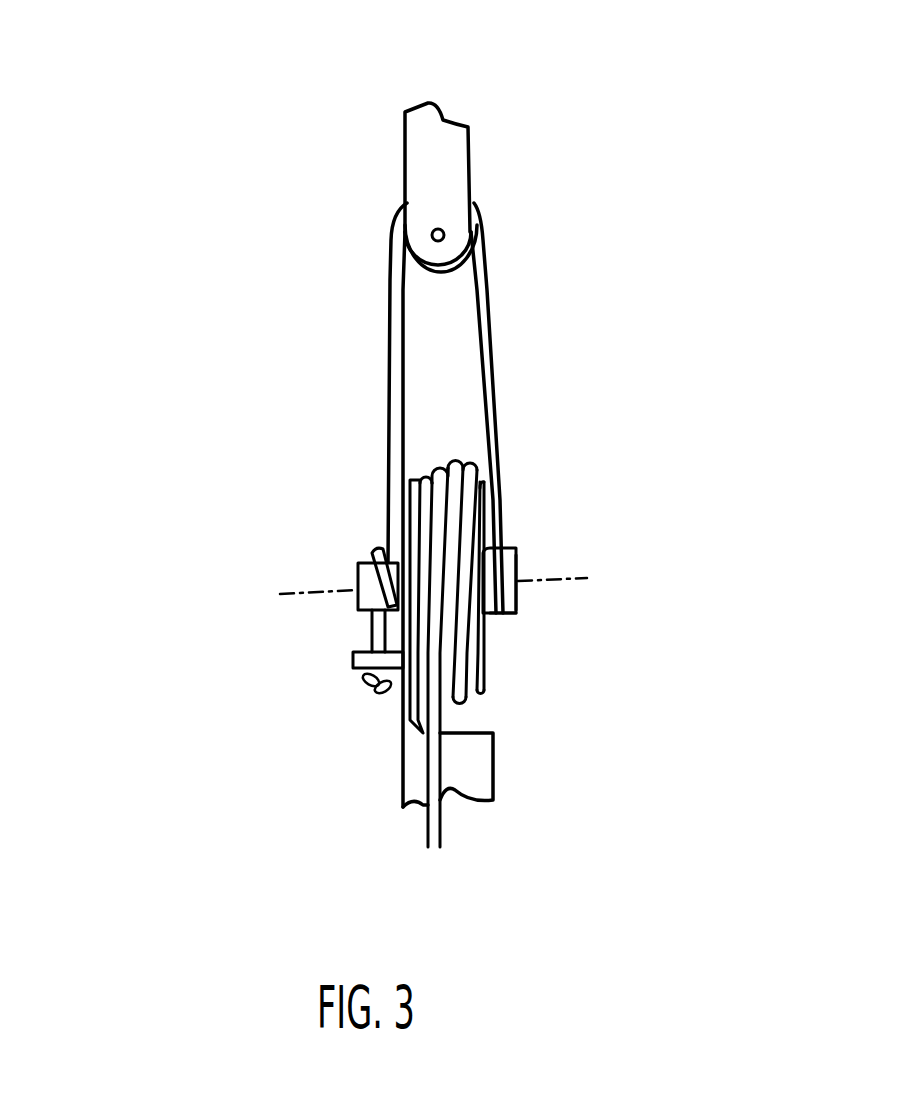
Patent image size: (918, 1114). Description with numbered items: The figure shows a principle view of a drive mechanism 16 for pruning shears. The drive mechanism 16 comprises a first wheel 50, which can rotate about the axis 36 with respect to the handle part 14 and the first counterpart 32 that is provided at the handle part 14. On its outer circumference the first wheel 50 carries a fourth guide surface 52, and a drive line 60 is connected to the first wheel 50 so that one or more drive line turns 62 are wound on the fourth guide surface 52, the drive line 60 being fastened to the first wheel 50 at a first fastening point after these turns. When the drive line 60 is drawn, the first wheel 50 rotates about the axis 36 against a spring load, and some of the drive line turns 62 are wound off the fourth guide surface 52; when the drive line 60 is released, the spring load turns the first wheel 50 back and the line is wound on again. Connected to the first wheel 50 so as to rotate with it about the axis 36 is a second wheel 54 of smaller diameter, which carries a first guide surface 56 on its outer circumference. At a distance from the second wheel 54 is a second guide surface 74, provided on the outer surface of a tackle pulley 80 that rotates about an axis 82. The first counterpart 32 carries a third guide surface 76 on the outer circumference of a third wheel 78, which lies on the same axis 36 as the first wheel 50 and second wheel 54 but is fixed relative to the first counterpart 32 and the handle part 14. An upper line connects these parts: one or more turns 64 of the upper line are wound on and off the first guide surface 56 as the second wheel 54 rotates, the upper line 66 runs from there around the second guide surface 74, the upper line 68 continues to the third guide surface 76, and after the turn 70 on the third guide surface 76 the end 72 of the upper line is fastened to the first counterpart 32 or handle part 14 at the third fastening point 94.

The handle part 14 is at (480, 774).
The drive mechanism 16 is at (285, 190).
The first counterpart 32 is at (410, 526).
The axis 36 is at (587, 578).
The first wheel 50 is at (480, 683).
The fourth guide surface 52 is at (473, 660).
The second wheel 54 is at (515, 552).
The first guide surface 56 is at (515, 592).
The drive line 60 is at (433, 813).
The drive line turns 62 is at (462, 493).
The turns of the upper line 64 is at (517, 568).
The upper line 66 is at (493, 312).
The upper line 68 is at (392, 378).
The turn of the upper line 70 is at (368, 563).
The end of the upper line 72 is at (360, 687).
The second guide surface 74 is at (400, 215).
The third guide surface 76 is at (367, 584).
The third wheel 78 is at (355, 606).
The tackle pulley 80 is at (445, 262).
The axis 82 is at (445, 234).
The third fastening point 94 is at (356, 672).